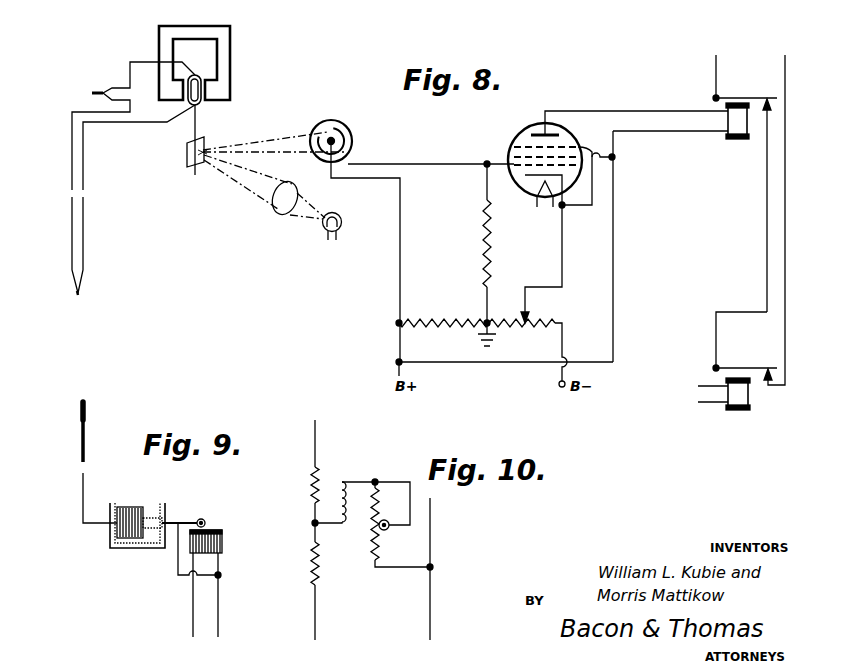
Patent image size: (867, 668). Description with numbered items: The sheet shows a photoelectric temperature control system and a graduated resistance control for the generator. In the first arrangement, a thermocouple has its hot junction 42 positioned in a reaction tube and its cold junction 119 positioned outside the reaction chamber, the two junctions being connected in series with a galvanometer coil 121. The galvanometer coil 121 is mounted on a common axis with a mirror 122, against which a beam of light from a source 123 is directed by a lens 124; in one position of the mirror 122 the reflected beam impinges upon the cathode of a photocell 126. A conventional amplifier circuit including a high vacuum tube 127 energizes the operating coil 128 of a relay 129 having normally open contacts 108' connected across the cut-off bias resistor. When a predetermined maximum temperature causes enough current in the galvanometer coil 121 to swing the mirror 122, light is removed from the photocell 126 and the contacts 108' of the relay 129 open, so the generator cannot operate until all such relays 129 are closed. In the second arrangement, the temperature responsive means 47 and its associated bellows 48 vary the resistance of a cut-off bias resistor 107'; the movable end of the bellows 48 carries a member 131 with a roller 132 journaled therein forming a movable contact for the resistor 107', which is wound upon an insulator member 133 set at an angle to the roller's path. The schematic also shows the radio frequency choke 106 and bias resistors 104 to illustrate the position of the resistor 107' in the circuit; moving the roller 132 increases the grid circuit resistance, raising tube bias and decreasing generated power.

In FIG. 8, the hot junction 42 is at (81, 290).
In FIG. 9, the temperature responsive means 47 is at (81, 463).
In FIG. 9, the bellows 48 is at (133, 508).
In FIG. 10, the bias resistors 104 is at (317, 468).
In FIG. 10, the radio frequency choke 106 is at (342, 484).
In FIG. 9, the cut-off bias resistor 107' is at (227, 538).
In FIG. 10, the cut-off bias resistor 107' is at (395, 561).
In FIG. 8, the normally open contacts 108' is at (746, 213).
In FIG. 8, the cold junction 119 is at (98, 91).
In FIG. 8, the galvanometer coil 121 is at (201, 102).
In FIG. 8, the mirror 122 is at (188, 166).
In FIG. 8, the light source 123 is at (342, 223).
In FIG. 8, the lens 124 is at (281, 214).
In FIG. 8, the photocell 126 is at (353, 136).
In FIG. 8, the high vacuum tube 127 is at (510, 146).
In FIG. 8, the operating coil 128 is at (738, 140).
In FIG. 8, the relay 129 is at (792, 101).
In FIG. 9, the member 131 is at (186, 519).
In FIG. 9, the roller 132 is at (206, 521).
In FIG. 10, the roller 132 is at (385, 530).
In FIG. 9, the insulator member 133 is at (222, 550).